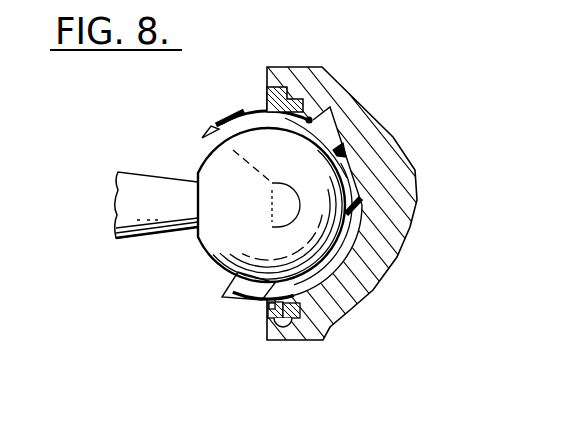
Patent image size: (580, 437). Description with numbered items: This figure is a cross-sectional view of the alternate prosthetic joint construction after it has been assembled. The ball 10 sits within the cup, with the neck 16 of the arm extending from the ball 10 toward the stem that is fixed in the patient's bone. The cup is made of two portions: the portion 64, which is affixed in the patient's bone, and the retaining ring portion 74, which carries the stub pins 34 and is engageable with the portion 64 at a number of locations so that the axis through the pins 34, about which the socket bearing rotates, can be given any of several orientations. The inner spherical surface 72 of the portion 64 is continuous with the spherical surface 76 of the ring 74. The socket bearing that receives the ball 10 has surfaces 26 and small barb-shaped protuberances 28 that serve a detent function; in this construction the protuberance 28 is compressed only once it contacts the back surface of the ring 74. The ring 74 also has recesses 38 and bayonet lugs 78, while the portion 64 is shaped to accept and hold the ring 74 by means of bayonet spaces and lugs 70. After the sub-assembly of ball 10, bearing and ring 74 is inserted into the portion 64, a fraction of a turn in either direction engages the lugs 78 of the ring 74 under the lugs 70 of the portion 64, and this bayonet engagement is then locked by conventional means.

The ball 10 is at (238, 203).
The neck 16 is at (128, 190).
The surfaces 26 is at (210, 133).
The barb-shaped protuberances 28 is at (214, 122).
The stub pins 34 is at (270, 214).
The recesses 38 is at (264, 103).
The portion 64 is at (375, 293).
The lugs 70 is at (270, 315).
The inner spherical surface 72 is at (346, 158).
The retaining ring portion 74 is at (300, 318).
The spherical surface 76 is at (312, 121).
The bayonet lugs 78 is at (284, 332).